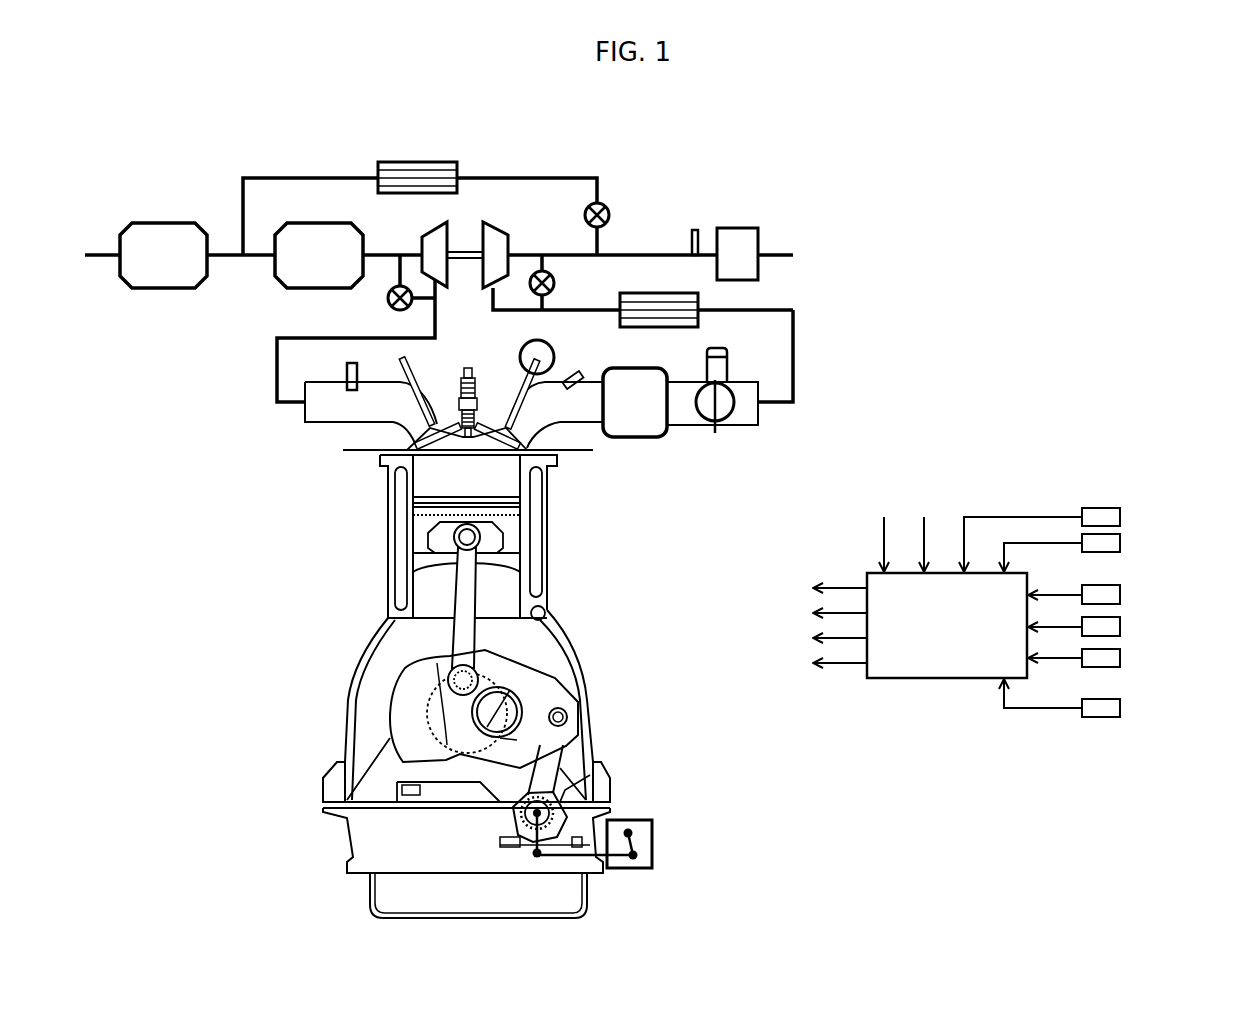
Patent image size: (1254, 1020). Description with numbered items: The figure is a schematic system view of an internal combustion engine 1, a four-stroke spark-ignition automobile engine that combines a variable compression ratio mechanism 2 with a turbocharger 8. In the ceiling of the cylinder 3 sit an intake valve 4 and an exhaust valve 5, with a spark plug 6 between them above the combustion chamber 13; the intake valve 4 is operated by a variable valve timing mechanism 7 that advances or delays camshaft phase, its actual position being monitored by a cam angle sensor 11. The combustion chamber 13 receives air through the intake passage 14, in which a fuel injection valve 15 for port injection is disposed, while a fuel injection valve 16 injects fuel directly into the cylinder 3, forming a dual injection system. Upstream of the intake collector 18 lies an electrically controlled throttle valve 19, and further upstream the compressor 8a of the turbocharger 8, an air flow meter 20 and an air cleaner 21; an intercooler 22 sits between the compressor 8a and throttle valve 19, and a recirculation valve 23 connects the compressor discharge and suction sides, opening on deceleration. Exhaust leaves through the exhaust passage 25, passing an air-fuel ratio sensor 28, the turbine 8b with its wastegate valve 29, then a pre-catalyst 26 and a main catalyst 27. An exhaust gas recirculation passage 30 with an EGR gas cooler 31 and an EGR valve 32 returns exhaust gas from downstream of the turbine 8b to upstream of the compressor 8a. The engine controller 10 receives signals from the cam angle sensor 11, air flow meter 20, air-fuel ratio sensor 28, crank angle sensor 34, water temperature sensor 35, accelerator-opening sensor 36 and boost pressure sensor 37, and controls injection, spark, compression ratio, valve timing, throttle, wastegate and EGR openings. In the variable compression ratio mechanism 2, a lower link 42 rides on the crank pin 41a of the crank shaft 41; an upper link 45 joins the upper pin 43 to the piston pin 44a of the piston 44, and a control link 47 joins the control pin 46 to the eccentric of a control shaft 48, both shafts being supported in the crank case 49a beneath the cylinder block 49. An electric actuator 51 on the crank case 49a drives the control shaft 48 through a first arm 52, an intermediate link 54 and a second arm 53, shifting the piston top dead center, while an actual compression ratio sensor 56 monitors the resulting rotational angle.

The internal combustion engine 1 is at (348, 590).
The variable compression ratio mechanism 2 is at (372, 683).
The cylinder 3 is at (413, 478).
The intake valve 4 is at (545, 452).
The exhaust valve 5 is at (405, 447).
The spark plug 6 is at (462, 385).
The variable valve timing mechanism 7 is at (521, 358).
The turbocharger 8 is at (464, 233).
The compressor 8a is at (508, 246).
The turbine 8b is at (422, 246).
The engine controller 10 is at (945, 640).
The cam angle sensor 11 is at (1100, 515).
The combustion chamber 13 is at (423, 456).
The intake passage 14 is at (795, 358).
The fuel injection valve for port injection 15 is at (578, 372).
The fuel injection valve for cylinder injection 16 is at (558, 462).
The intake collector 18 is at (647, 437).
The throttle valve 19 is at (725, 410).
The air flow meter 20 is at (695, 228).
The air cleaner 21 is at (735, 240).
The intercooler 22 is at (700, 300).
The recirculation valve 23 is at (556, 283).
The exhaust passage 25 is at (277, 377).
The pre-catalyst 26 is at (288, 280).
The main catalyst 27 is at (137, 290).
The air-fuel ratio sensor 28 is at (347, 375).
The wastegate valve 29 is at (388, 298).
The exhaust gas recirculation passage 30 is at (305, 176).
The EGR gas cooler 31 is at (412, 163).
The EGR valve 32 is at (610, 212).
The crank angle sensor 34 is at (1100, 545).
The water temperature sensor 35 is at (1100, 597).
The accelerator-opening sensor 36 is at (1100, 629).
The boost pressure sensor 37 is at (1100, 660).
The crank shaft 41 is at (395, 712).
The crank pin 41a is at (517, 710).
The lower link 42 is at (525, 652).
The upper pin 43 is at (450, 676).
The piston 44 is at (420, 528).
The piston pin 44a is at (462, 538).
The upper link 45 is at (468, 577).
The control pin 46 is at (568, 717).
The control link 47 is at (555, 785).
The control shaft 48 is at (522, 813).
The cylinder block 49 is at (330, 790).
The crank case 49a is at (400, 880).
The electric actuator 51 is at (652, 830).
The first arm 52 is at (652, 845).
The second arm 53 is at (530, 852).
The intermediate link 54 is at (568, 858).
The actual compression ratio sensor 56 is at (1100, 710).